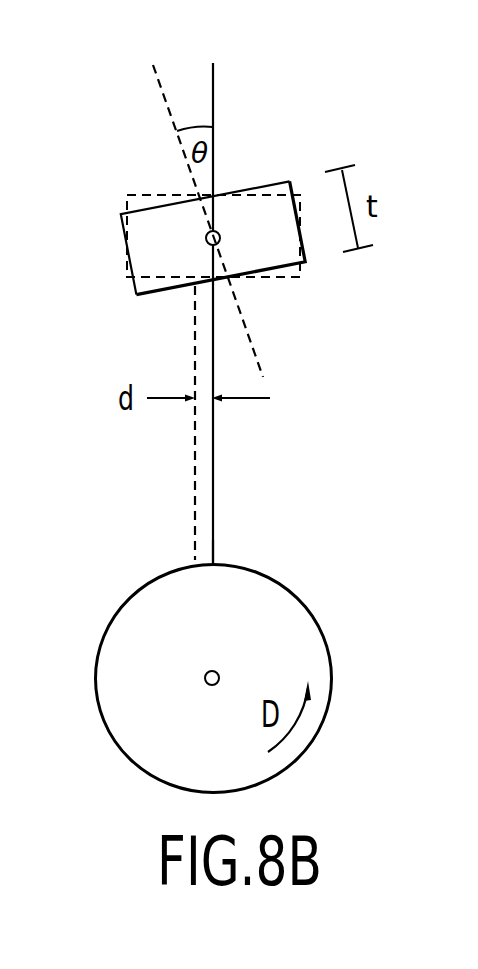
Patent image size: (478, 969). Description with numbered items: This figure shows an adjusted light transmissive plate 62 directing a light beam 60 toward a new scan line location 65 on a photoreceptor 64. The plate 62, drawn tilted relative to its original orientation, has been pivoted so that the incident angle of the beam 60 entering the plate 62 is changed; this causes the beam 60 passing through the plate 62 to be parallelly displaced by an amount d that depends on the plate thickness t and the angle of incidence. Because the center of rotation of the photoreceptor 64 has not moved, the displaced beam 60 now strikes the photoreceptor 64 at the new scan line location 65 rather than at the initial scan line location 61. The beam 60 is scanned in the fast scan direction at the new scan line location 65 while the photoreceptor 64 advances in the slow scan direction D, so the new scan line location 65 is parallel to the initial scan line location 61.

The light beam 60 is at (213, 80).
The scan line location 61 is at (192, 560).
The plate 62 is at (262, 187).
The photoreceptor 64 is at (332, 660).
The new scan line location 65 is at (215, 565).